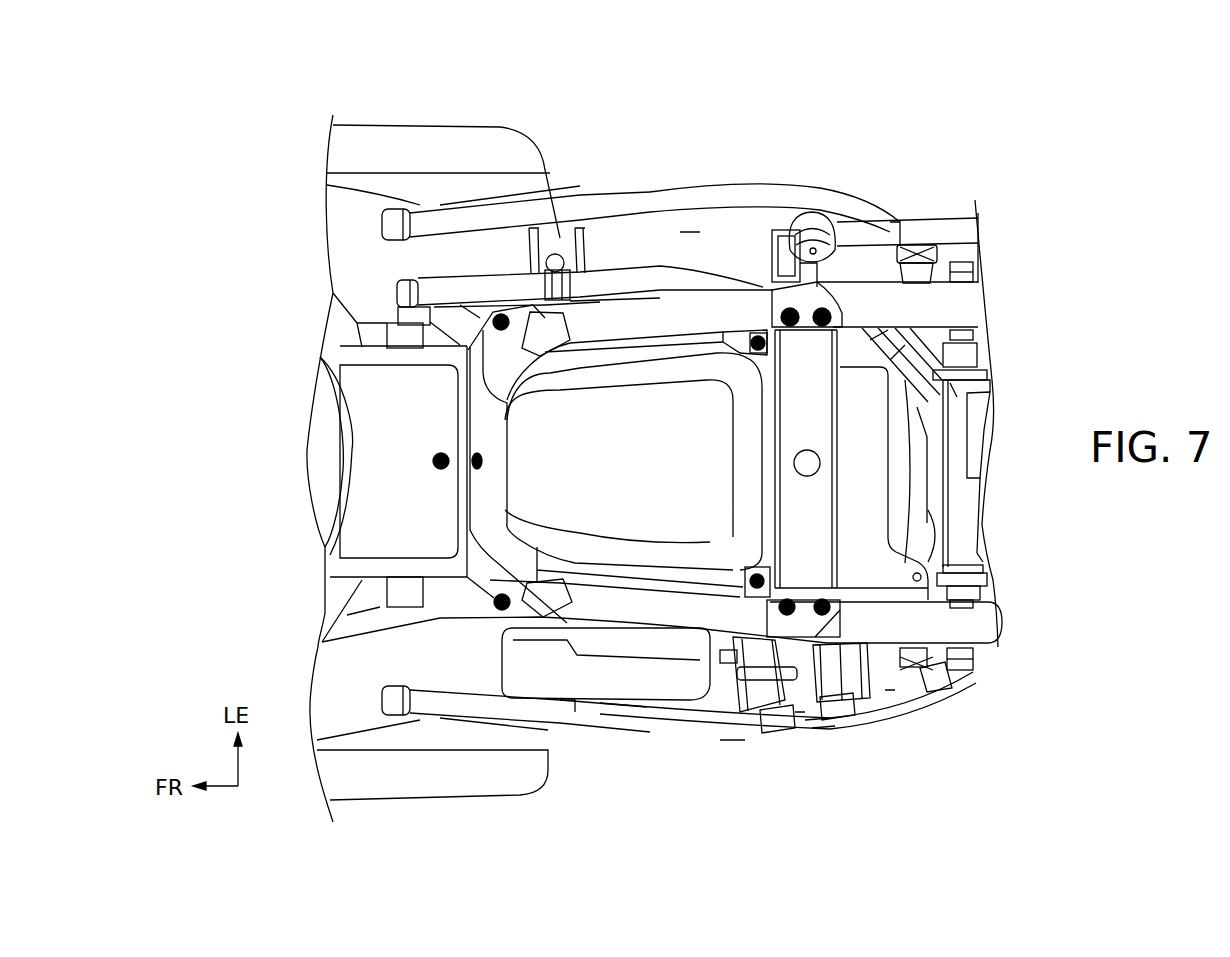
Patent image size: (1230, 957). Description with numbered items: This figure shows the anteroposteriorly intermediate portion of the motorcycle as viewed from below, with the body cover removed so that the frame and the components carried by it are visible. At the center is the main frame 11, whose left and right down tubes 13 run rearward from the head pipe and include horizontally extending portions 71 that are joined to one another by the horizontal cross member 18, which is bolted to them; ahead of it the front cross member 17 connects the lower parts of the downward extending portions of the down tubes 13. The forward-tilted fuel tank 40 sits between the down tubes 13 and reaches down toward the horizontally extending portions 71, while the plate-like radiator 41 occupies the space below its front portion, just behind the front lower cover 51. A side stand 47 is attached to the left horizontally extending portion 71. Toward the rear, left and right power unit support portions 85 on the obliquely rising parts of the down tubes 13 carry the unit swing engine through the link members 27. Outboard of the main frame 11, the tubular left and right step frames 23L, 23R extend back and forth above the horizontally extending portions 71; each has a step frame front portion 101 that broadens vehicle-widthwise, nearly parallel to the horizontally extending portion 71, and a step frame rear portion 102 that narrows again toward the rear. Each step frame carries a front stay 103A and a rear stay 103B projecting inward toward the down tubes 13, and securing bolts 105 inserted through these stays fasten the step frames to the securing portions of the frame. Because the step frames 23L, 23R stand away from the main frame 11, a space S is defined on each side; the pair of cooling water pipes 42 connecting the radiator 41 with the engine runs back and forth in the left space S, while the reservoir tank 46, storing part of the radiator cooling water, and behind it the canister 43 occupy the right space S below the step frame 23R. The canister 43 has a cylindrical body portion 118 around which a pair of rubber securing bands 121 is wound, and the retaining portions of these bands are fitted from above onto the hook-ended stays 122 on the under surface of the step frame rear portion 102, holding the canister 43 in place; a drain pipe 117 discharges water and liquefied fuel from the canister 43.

The main frame 11 is at (595, 296).
The down tube 13 is at (627, 296).
The front cross member 17 is at (485, 340).
The horizontal cross member 18 is at (801, 350).
The left step frame 23L is at (665, 193).
The right step frame 23R is at (703, 733).
The link member 27 is at (938, 327).
The fuel tank 40 is at (660, 397).
The radiator 41 is at (391, 322).
The cooling water pipe 42 is at (727, 300).
The canister 43 is at (815, 725).
The reservoir tank 46 is at (637, 683).
The side stand 47 is at (930, 230).
The front lower cover 51 is at (355, 402).
The horizontally extending portion 71 is at (748, 307).
The power unit support portion 85 is at (873, 290).
The step frame front portion 101 is at (512, 213).
The step frame rear portion 102 is at (822, 197).
The front stay 103A is at (548, 237).
The rear stay 103B is at (900, 220).
The securing bolt 105 is at (933, 687).
The drain pipe 117 is at (758, 737).
The body portion 118 is at (822, 730).
The securing band 121 is at (802, 727).
The stay 122 is at (797, 727).
The space S is at (688, 222).